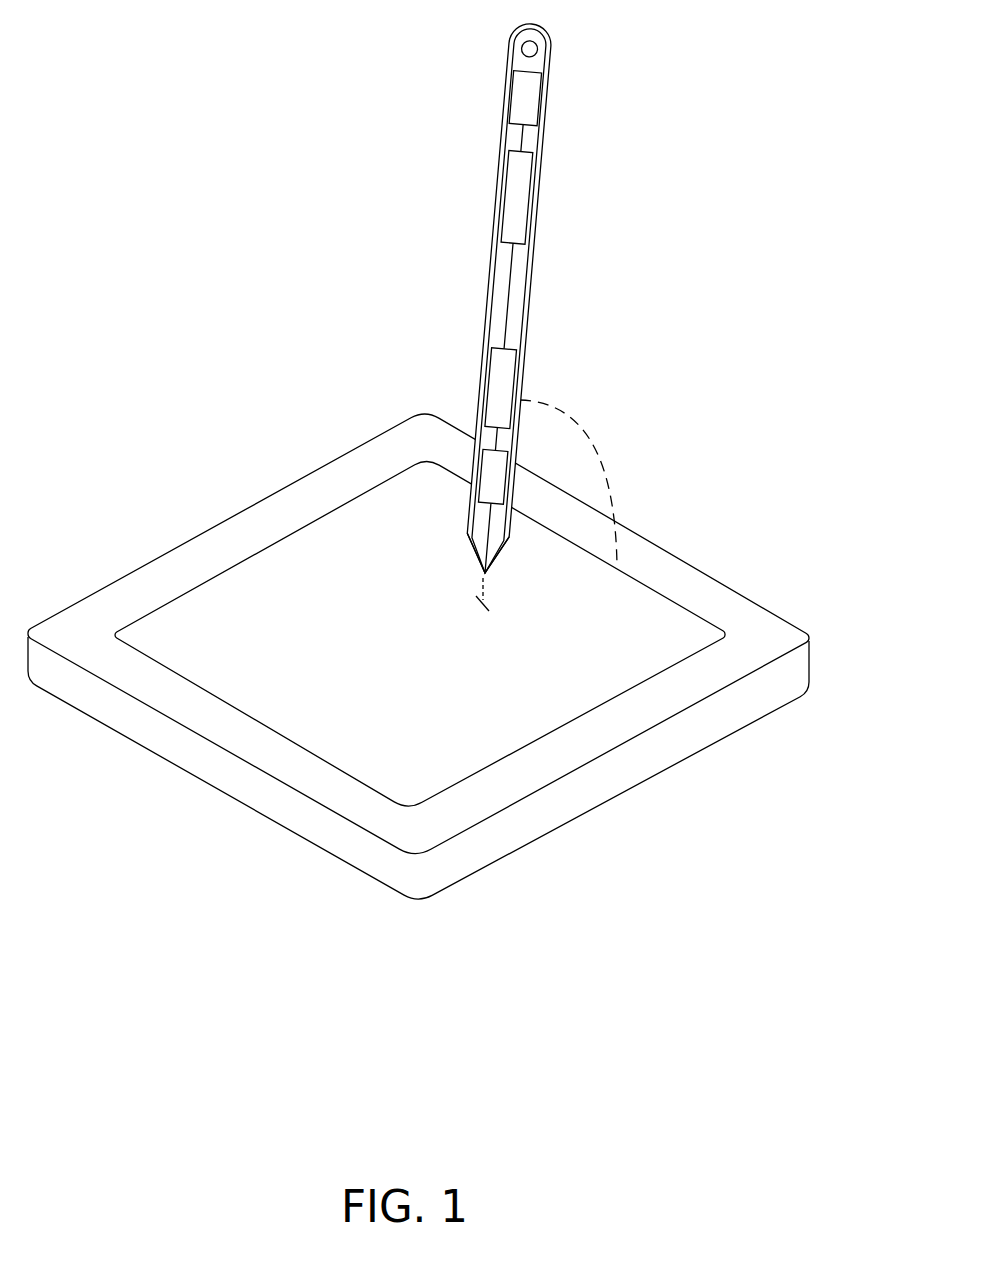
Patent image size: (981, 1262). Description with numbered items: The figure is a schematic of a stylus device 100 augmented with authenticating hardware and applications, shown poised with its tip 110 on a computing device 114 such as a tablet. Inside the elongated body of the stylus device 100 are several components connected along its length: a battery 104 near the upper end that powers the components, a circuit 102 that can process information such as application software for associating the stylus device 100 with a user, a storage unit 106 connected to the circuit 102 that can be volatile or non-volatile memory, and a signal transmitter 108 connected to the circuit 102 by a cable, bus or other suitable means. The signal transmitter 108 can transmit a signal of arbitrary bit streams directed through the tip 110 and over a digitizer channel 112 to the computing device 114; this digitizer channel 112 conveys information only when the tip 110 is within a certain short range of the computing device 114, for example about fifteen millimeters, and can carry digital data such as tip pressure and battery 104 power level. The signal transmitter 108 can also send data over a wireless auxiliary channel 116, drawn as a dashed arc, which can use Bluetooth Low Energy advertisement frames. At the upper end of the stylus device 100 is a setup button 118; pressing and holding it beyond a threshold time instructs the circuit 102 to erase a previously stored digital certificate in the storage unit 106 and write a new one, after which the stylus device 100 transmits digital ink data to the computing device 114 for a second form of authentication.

The stylus device 100 is at (531, 287).
The circuit 102 is at (516, 195).
The battery 104 is at (520, 97).
The storage unit 106 is at (498, 380).
The signal transmitter 108 is at (493, 480).
The tip 110 is at (485, 573).
The digitizer channel 112 is at (483, 593).
The computing device 114 is at (196, 530).
The wireless auxiliary channel 116 is at (578, 432).
The setup button 118 is at (528, 37).